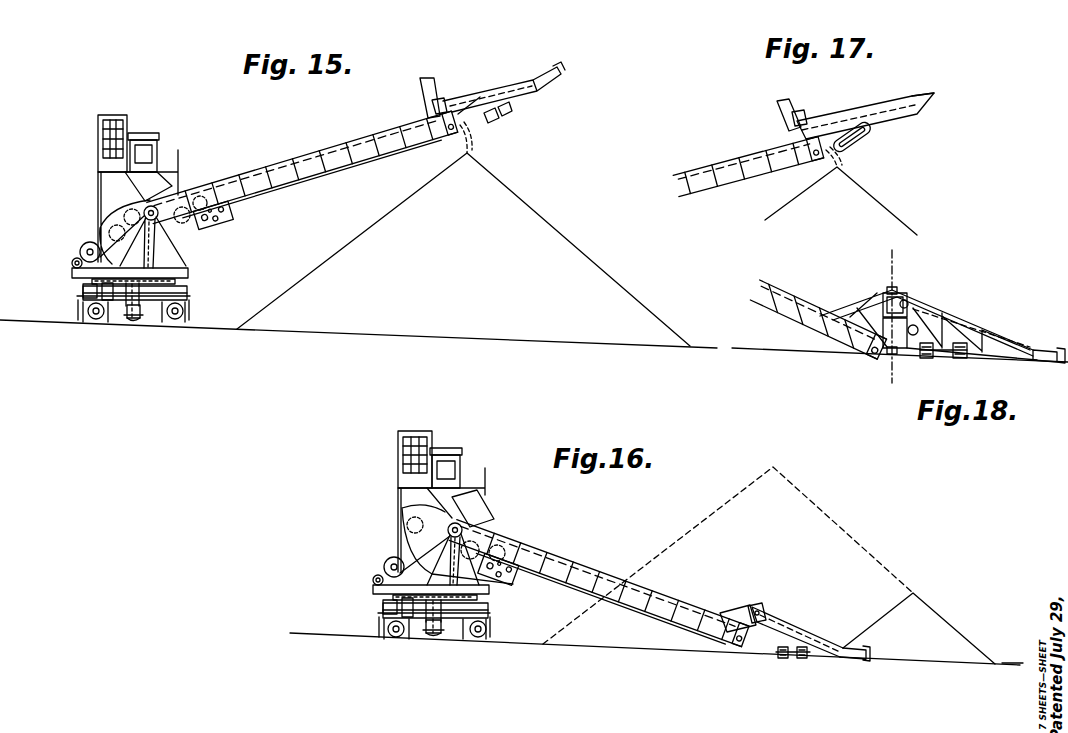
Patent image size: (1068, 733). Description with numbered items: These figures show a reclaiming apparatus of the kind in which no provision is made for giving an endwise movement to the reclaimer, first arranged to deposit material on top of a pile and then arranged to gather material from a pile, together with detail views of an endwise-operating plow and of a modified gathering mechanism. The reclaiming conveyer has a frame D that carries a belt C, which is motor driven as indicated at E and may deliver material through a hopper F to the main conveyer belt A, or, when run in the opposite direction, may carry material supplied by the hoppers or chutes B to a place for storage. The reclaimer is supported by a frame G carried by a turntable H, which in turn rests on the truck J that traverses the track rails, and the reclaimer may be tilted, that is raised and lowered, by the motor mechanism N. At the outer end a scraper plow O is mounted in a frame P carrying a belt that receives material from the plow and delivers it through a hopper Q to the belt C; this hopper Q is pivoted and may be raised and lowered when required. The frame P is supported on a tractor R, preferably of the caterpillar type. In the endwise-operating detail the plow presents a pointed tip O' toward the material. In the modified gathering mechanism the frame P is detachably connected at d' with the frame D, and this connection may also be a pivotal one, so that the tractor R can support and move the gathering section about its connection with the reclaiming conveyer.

In FIG. 15, the main conveyer belt A is at (134, 320).
In FIG. 16, the main conveyer belt A is at (433, 637).
In FIG. 15, the hoppers or chutes B is at (142, 183).
In FIG. 15, the belt C is at (262, 195).
In FIG. 16, the belt C is at (610, 600).
In FIG. 15, the frame of the boom or reclaiming conveyer D is at (316, 182).
In FIG. 16, the frame of the boom or reclaiming conveyer D is at (604, 578).
In FIG. 17, the frame of the boom or reclaiming conveyer D is at (690, 173).
In FIG. 18, the frame of the boom or reclaiming conveyer D is at (772, 284).
In FIG. 15, the motor E is at (225, 236).
In FIG. 16, the motor E is at (495, 572).
In FIG. 15, the hopper F is at (150, 310).
In FIG. 16, the hopper F is at (449, 627).
In FIG. 15, the frame G is at (190, 272).
In FIG. 15, the turntable H is at (90, 281).
In FIG. 16, the turntable H is at (488, 598).
In FIG. 15, the truck J is at (188, 293).
In FIG. 15, the motor mechanism N is at (78, 252).
In FIG. 16, the motor mechanism N is at (382, 572).
In FIG. 15, the scraper plow O is at (555, 54).
In FIG. 16, the scraper plow O is at (870, 645).
In FIG. 18, the scraper plow O is at (1029, 372).
In FIG. 17, the pointed chute tip O' is at (916, 78).
In FIG. 15, the frame P is at (502, 88).
In FIG. 16, the frame P is at (802, 627).
In FIG. 17, the frame P is at (839, 111).
In FIG. 18, the frame P is at (1005, 341).
In FIG. 15, the hopper Q is at (434, 78).
In FIG. 16, the hopper Q is at (745, 613).
In FIG. 17, the hopper Q is at (779, 117).
In FIG. 15, the tractor R is at (500, 120).
In FIG. 16, the tractor R is at (800, 657).
In FIG. 17, the tractor R is at (870, 137).
In FIG. 18, the tractor R is at (935, 359).
In FIG. 18, the detachable connection d' is at (892, 321).